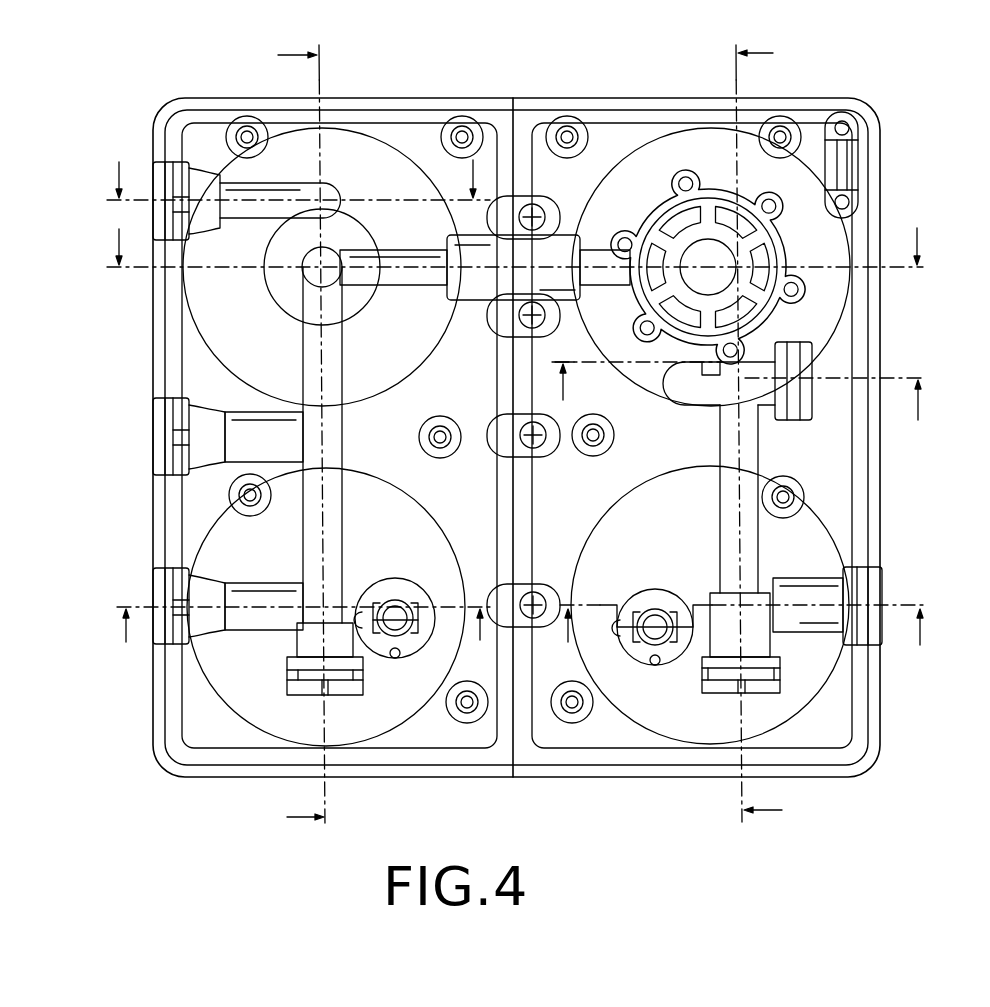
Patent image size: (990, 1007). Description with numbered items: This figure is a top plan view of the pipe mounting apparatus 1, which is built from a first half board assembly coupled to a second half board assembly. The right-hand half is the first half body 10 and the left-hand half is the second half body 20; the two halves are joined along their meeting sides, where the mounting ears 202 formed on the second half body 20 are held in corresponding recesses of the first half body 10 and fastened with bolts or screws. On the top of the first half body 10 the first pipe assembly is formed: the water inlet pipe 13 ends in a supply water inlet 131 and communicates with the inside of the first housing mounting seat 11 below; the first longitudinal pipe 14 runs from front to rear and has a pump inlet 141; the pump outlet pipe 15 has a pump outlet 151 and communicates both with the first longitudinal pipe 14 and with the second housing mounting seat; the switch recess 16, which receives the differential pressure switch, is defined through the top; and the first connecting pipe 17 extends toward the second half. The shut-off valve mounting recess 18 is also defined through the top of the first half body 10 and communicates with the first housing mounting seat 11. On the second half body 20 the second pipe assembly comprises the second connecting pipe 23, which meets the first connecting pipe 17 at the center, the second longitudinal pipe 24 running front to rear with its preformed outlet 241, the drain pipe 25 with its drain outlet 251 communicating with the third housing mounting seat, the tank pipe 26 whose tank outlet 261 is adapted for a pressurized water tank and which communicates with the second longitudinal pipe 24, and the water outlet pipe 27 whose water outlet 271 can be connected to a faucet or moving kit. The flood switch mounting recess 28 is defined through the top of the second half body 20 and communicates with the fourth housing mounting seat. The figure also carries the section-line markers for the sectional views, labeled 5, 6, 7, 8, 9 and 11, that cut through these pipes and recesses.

The pipe mounting apparatus 1 is at (515, 82).
The first half body 10 is at (640, 95).
The second half body 20 is at (382, 96).
The mounting ears 202 is at (541, 779).
The water inlet pipe 13 is at (810, 625).
The supply water inlet 131 is at (882, 585).
The first longitudinal pipe 14 is at (752, 543).
The pump inlet 141 is at (725, 693).
The pump outlet pipe 15 is at (757, 398).
The pump outlet 151 is at (812, 370).
The switch recess 16 is at (785, 245).
The first connecting pipe 17 is at (558, 240).
The shut-off valve mounting recess 18 is at (636, 653).
The second connecting pipe 23 is at (428, 276).
The second longitudinal pipe 24 is at (338, 437).
The preformed outlet 241 is at (347, 693).
The drain pipe 25 is at (260, 185).
The drain outlet 251 is at (148, 162).
The tank pipe 26 is at (248, 412).
The tank outlet 261 is at (150, 402).
The water outlet pipe 27 is at (253, 586).
The water outlet 271 is at (153, 632).
The flood switch mounting recess 28 is at (387, 592).
The section line 5- 5 is at (751, 636).
The section line 6- 6 is at (759, 437).
The section line 7- 7 is at (746, 395).
The section line 8- 8 is at (515, 245).
The section line 9- 9 is at (301, 438).
The first housing mounting seat 11 is at (290, 644).